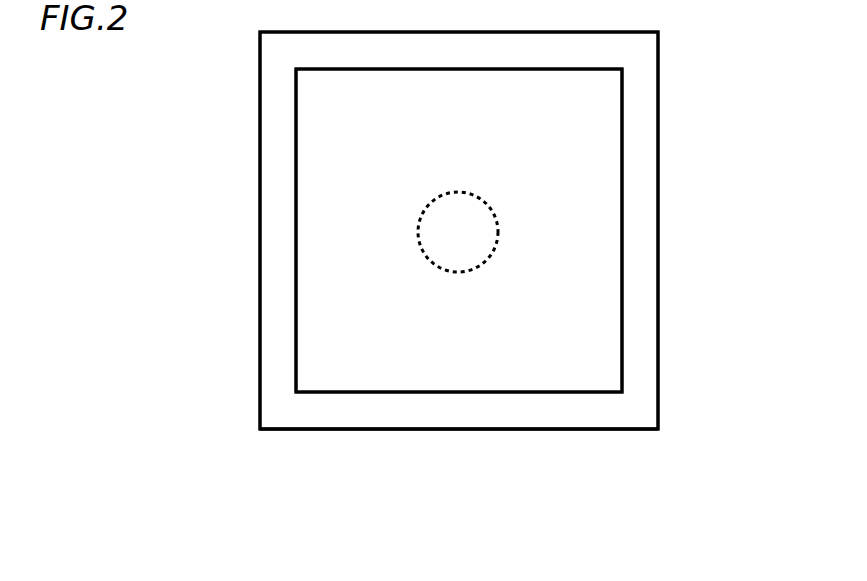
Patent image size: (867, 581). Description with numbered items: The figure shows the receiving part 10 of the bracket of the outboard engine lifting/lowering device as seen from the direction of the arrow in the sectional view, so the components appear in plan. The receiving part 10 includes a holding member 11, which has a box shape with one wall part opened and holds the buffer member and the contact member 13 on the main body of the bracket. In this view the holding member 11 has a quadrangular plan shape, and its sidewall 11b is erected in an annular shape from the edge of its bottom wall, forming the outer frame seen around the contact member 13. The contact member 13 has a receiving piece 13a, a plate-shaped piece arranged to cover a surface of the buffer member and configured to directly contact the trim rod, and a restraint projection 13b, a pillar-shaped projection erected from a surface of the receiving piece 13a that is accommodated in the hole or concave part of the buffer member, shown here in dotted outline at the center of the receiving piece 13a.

The receiving part 10 is at (268, 479).
The holding member 11 is at (355, 445).
The sidewall 11b is at (396, 430).
The contact member 13 is at (631, 223).
The receiving piece 13a is at (599, 355).
The restraint projection 13b is at (465, 233).